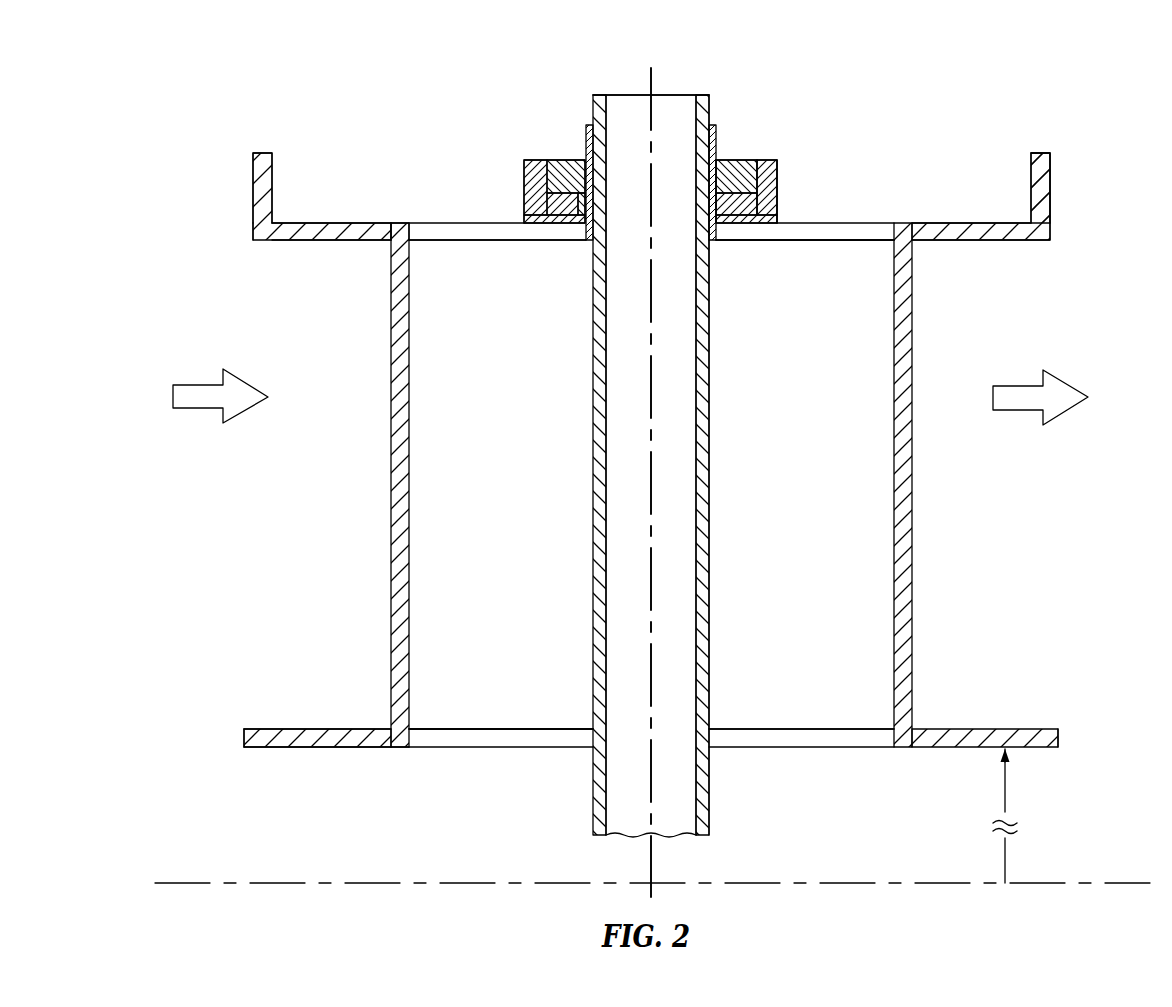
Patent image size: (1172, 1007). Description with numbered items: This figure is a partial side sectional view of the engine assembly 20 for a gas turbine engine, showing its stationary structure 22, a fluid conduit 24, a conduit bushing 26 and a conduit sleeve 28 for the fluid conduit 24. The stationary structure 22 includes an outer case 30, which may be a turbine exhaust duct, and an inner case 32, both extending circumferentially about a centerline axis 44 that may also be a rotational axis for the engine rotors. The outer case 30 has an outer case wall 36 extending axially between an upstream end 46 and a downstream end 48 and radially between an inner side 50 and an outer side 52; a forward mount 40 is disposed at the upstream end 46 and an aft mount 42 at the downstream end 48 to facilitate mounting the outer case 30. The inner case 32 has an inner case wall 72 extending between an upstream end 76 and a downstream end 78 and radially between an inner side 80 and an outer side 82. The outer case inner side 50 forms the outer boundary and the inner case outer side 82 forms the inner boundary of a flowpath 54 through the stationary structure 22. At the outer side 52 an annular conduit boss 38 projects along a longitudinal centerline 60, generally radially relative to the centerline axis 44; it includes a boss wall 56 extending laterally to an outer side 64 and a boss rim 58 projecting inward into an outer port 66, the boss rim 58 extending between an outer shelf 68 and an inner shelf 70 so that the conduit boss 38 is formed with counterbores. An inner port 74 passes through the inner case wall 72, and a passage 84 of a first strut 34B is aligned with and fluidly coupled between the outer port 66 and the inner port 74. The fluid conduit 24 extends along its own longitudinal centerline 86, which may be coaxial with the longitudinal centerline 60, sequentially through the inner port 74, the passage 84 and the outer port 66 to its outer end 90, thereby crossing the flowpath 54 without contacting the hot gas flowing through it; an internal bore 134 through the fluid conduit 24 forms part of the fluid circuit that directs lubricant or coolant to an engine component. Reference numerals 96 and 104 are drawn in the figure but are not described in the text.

The assembly 20 is at (1105, 111).
The stationary structure 22 is at (1072, 207).
The fluid conduit 24 is at (712, 458).
The conduit bushing 26 is at (752, 157).
The conduit sleeve 28 is at (584, 130).
The outer case 30 is at (338, 221).
The inner case 32 is at (340, 749).
The first strut 34B is at (390, 542).
The outer case wall 36 is at (388, 221).
The conduit boss 38 is at (522, 172).
The forward mount 40 is at (253, 178).
The aft mount 42 is at (1050, 170).
The centerline axis 44 is at (163, 883).
The upstream end 46 is at (253, 228).
The downstream end 48 is at (1050, 228).
The inner side 50 is at (293, 242).
The outer side 52 is at (313, 222).
The flowpath 54 is at (318, 463).
The boss wall 56 is at (773, 195).
The boss rim 58 is at (737, 216).
The longitudinal centerline 60 is at (651, 852).
The outer side 64 is at (524, 203).
The outer port 66 is at (837, 241).
The outer shelf 68 is at (757, 178).
The inner shelf 70 is at (748, 216).
The inner case wall 72 is at (393, 749).
The inner port 74 is at (548, 749).
The upstream end 76 is at (244, 736).
The downstream end 78 is at (1058, 740).
The inner side 80 is at (280, 748).
The outer side 82 is at (297, 729).
The passage 84 is at (511, 525).
The longitudinal centerline 86 is at (719, 482).
The outer end 90 is at (703, 95).
The shaft outer surface 96 is at (709, 618).
The axis 104 is at (738, 482).
The internal bore 134 is at (669, 553).